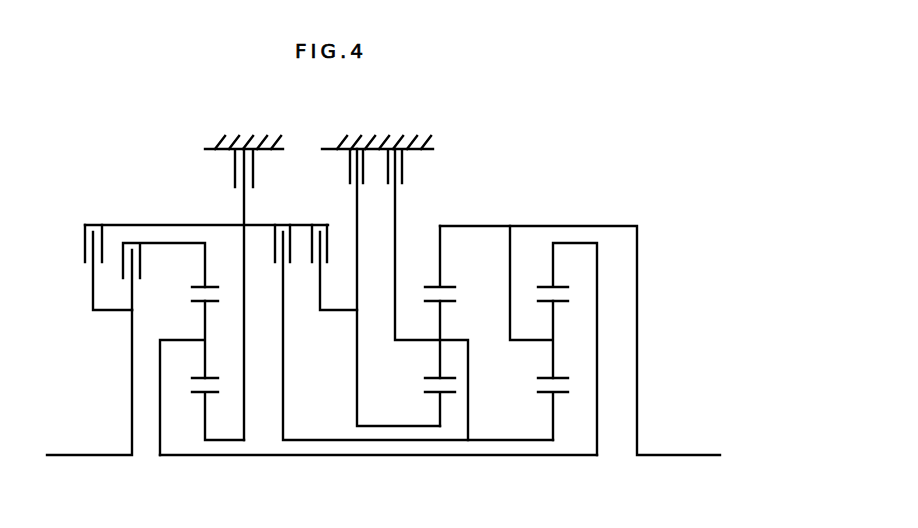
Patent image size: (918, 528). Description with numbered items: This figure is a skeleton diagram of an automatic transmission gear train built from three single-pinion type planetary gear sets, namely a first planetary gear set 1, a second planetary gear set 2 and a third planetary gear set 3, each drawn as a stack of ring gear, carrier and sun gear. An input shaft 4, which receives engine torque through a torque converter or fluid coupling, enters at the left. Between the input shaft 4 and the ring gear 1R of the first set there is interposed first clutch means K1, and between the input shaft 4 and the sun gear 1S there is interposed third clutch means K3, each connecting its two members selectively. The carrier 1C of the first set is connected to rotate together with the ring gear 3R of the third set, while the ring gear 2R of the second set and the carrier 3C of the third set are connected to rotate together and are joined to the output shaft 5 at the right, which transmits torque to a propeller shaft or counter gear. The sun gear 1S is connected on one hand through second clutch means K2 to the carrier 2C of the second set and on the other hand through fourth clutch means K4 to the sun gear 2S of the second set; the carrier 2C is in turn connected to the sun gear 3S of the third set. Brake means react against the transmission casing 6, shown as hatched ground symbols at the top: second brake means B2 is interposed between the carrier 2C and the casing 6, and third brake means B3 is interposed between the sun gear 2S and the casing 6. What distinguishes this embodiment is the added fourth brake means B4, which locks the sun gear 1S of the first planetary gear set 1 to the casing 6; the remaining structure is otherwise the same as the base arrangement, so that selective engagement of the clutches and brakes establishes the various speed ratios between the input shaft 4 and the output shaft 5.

The transmission casing 6 is at (226, 144).
The fourth brake means B4 is at (240, 275).
The third brake means B3 is at (391, 268).
The second brake means B2 is at (428, 275).
The third clutch means K3 is at (104, 254).
The second clutch means K2 is at (411, 319).
The fourth clutch means K4 is at (333, 254).
The first clutch means K1 is at (164, 276).
The input shaft 4 is at (93, 455).
The output shaft 5 is at (676, 456).
The first planetary gear set 1 is at (194, 381).
The ring gear of the first planetary gear set 1R is at (213, 288).
The carrier of the first planetary gear set 1C is at (198, 340).
The sun gear of the first planetary gear set 1S is at (192, 434).
The second planetary gear set 2 is at (431, 364).
The ring gear of the second planetary gear set 2R is at (440, 288).
The carrier of the second planetary gear set 2C is at (448, 340).
The sun gear of the second planetary gear set 2S is at (428, 395).
The third planetary gear set 3 is at (545, 364).
The ring gear of the third planetary gear set 3R is at (546, 287).
The carrier of the third planetary gear set 3C is at (536, 340).
The sun gear of the third planetary gear set 3S is at (544, 395).